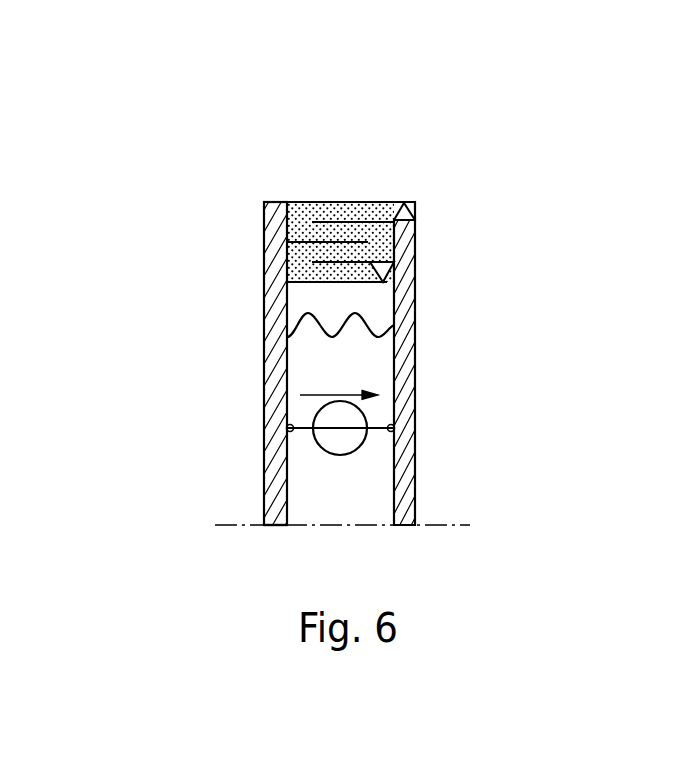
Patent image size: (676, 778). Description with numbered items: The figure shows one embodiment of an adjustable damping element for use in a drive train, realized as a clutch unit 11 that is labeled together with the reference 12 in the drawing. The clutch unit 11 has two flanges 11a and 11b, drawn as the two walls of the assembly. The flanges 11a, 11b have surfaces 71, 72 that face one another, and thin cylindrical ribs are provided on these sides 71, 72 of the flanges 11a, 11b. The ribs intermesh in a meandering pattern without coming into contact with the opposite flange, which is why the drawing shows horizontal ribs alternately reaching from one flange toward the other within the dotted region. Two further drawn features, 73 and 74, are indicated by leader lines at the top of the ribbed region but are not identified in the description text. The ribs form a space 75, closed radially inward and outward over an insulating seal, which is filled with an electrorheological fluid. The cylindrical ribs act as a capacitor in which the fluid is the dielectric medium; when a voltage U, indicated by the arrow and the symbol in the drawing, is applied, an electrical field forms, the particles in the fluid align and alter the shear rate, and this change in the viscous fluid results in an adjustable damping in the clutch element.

The clutch unit 11 is at (336, 294).
The sensor arrangement 12 is at (413, 157).
The flange 11a is at (278, 318).
The flange 11b is at (407, 404).
The surface 71 is at (293, 222).
The surface 72 is at (384, 241).
The electrode layer 73 is at (315, 200).
The electrode layer 74 is at (370, 200).
The space 75 is at (362, 363).